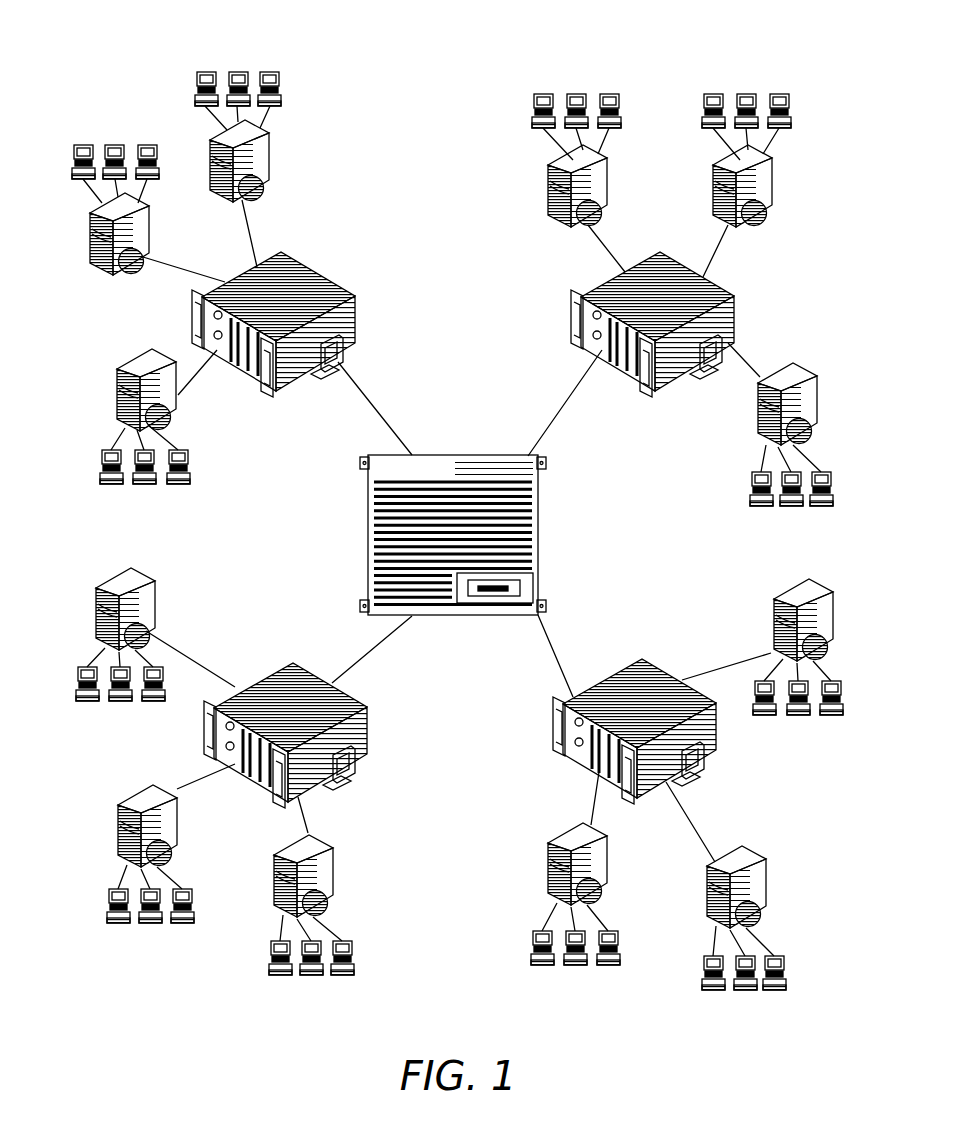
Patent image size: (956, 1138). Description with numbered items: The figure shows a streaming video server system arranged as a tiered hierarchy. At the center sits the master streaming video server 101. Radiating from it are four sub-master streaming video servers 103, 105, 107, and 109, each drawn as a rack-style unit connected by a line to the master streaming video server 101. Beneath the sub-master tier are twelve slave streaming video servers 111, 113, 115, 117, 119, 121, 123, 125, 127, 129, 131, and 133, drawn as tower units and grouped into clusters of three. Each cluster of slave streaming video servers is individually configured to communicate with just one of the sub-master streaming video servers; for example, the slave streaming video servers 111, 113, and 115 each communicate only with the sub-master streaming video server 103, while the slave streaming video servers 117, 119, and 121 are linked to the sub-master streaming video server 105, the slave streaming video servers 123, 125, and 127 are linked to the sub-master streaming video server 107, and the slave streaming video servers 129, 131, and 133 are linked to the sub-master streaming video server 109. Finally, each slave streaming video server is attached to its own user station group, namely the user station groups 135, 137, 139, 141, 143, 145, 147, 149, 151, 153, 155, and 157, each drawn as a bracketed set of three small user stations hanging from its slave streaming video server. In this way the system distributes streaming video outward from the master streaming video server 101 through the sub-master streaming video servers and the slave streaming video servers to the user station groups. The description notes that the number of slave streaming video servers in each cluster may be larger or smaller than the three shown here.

The master streaming video server 101 is at (368, 505).
The sub-master streaming video server 103 is at (248, 268).
The sub-master streaming video server 105 is at (598, 283).
The sub-master streaming video server 107 is at (281, 667).
The sub-master streaming video server 109 is at (573, 697).
The slave streaming video server 111 is at (270, 165).
The slave streaming video server 113 is at (150, 221).
The slave streaming video server 115 is at (122, 368).
The slave streaming video server 117 is at (550, 171).
The slave streaming video server 119 is at (715, 171).
The slave streaming video server 121 is at (757, 420).
The slave streaming video server 123 is at (119, 570).
The slave streaming video server 125 is at (146, 792).
The slave streaming video server 127 is at (291, 845).
The slave streaming video server 129 is at (785, 593).
The slave streaming video server 131 is at (565, 835).
The slave streaming video server 133 is at (714, 860).
The user station group 135 is at (239, 56).
The user station group 137 is at (116, 128).
The user station group 139 is at (145, 495).
The user station group 141 is at (577, 77).
The user station group 143 is at (746, 77).
The user station group 145 is at (791, 515).
The user station group 147 is at (120, 710).
The user station group 149 is at (150, 932).
The user station group 151 is at (311, 985).
The user station group 153 is at (575, 974).
The user station group 155 is at (744, 997).
The user station group 157 is at (798, 725).